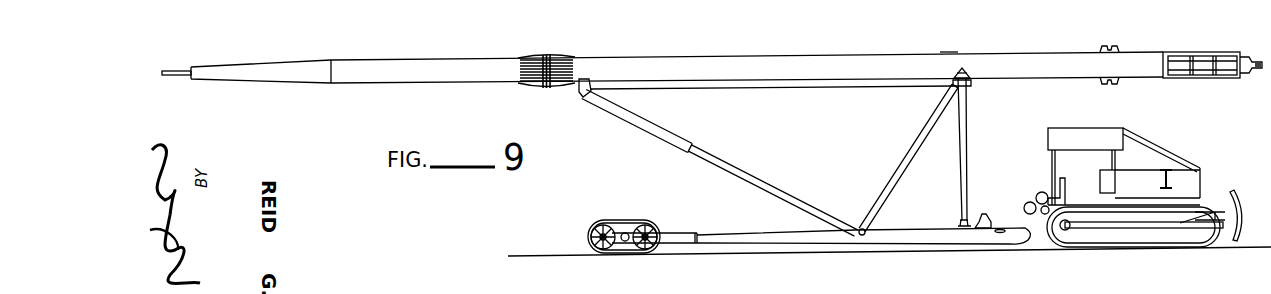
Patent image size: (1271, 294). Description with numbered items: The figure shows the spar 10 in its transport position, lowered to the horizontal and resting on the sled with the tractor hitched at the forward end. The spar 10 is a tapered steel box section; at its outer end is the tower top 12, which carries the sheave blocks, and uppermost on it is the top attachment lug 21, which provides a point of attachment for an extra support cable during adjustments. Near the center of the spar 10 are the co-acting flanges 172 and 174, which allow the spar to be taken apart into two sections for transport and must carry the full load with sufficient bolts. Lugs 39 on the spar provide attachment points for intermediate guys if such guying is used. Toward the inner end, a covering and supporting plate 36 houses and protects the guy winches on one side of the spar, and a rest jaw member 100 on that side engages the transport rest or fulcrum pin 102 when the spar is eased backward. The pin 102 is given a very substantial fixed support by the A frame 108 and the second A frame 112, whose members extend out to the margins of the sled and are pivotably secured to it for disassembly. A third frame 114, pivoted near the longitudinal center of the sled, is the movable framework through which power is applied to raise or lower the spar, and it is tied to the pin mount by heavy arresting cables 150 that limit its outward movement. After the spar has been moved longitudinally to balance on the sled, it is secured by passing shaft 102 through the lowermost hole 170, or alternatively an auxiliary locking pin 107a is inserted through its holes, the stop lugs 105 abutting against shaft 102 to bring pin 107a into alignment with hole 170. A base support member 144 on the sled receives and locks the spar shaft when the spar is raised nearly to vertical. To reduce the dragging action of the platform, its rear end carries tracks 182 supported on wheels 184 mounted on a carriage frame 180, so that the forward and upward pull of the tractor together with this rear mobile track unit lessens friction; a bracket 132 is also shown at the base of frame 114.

The spar 10 is at (870, 52).
The tower top 12 is at (295, 67).
The top attachment lug 21 is at (175, 77).
The covering and supporting plate 36 is at (1218, 53).
The lugs 39 is at (575, 56).
The rest jaw member 100 is at (1112, 46).
The transport rest or fulcrum pin 102 is at (969, 80).
The stop lugs 105 is at (953, 50).
The auxiliary locking shaft or pin 107a is at (964, 72).
The A frame 108 is at (965, 152).
The second A frame 112 is at (903, 162).
The third frame 114 is at (743, 176).
The bracket 132 is at (613, 93).
The base support member 144 is at (982, 221).
The arresting cables 150 is at (848, 86).
The lowermost hole 170 is at (962, 62).
The flange 172 is at (545, 56).
The flange 174 is at (549, 56).
The carriage frame 180 is at (677, 239).
The tracks 182 is at (622, 221).
The wheels 184 is at (638, 244).